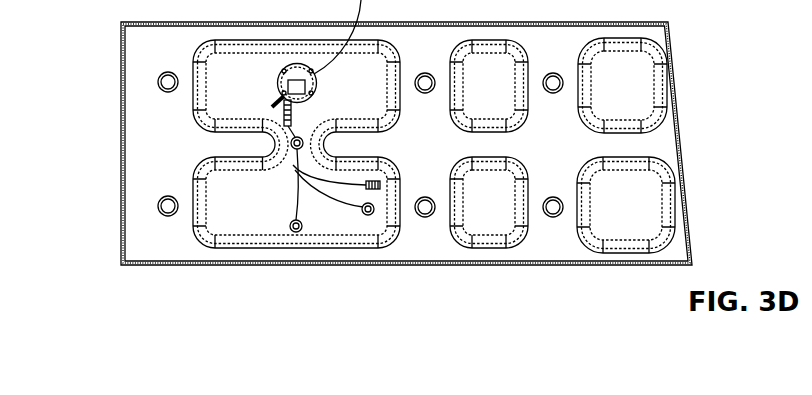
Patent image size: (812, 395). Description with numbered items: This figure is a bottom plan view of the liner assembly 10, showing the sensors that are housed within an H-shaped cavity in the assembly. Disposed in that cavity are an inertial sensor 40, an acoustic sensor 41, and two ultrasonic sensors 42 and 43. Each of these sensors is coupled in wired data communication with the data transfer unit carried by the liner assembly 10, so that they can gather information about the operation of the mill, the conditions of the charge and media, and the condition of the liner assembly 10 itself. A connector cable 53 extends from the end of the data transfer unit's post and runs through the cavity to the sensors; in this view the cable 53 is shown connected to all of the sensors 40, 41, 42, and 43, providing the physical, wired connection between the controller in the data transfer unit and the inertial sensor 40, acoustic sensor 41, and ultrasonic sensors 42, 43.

The liner assembly 10 is at (668, 42).
The inertial sensor 40 is at (381, 182).
The acoustic sensor 41 is at (367, 216).
The ultrasonic sensor 42 is at (296, 233).
The ultrasonic sensor 43 is at (292, 160).
The connector cable 53 is at (298, 116).